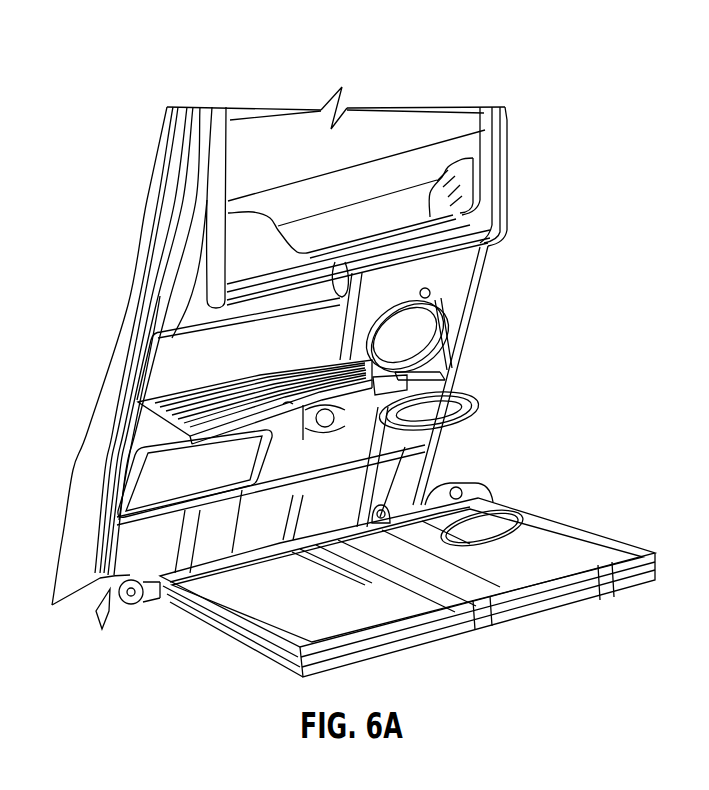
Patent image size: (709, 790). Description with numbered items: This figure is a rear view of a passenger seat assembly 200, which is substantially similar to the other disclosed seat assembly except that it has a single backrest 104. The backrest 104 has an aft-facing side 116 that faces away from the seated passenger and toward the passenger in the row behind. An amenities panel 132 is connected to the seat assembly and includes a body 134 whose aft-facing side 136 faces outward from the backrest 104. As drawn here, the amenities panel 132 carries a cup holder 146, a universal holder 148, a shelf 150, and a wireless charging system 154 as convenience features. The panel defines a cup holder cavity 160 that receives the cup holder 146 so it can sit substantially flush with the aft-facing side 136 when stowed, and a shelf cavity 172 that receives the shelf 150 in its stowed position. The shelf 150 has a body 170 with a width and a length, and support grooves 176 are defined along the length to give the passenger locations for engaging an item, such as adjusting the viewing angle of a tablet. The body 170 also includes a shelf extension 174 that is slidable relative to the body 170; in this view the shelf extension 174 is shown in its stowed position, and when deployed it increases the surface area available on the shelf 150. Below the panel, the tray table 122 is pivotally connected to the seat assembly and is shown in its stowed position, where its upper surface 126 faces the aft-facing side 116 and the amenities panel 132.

The passenger seat assembly 200 is at (526, 39).
The backrest 104 is at (500, 168).
The aft-facing side 116 is at (487, 122).
The aft-facing side 136 is at (462, 253).
The amenities panel 132 is at (460, 280).
The shelf cavity 172 is at (170, 338).
The shelf 150 is at (123, 408).
The universal holder 148 is at (104, 482).
The body 170 is at (207, 392).
The support grooves 176 is at (277, 342).
The shelf extension 174 is at (284, 412).
The wireless charging system 154 is at (318, 427).
The cup holder cavity 160 is at (440, 303).
The body 134 is at (447, 357).
The cup holder 146 is at (479, 405).
The upper surface 126 is at (258, 620).
The tray table 122 is at (566, 607).